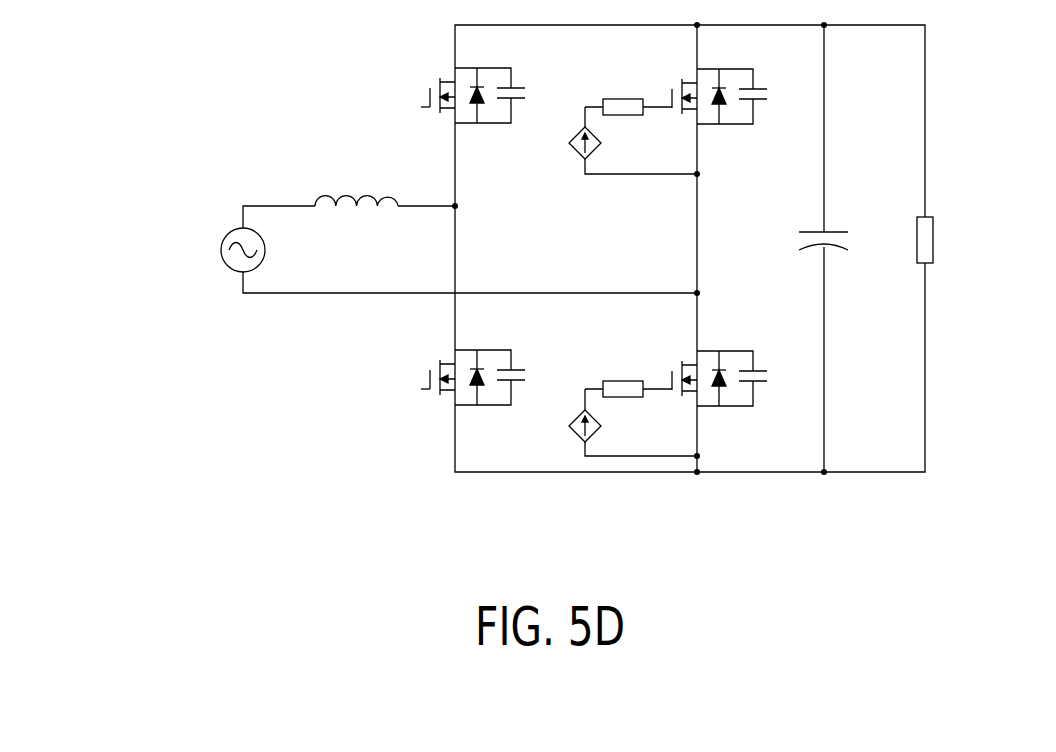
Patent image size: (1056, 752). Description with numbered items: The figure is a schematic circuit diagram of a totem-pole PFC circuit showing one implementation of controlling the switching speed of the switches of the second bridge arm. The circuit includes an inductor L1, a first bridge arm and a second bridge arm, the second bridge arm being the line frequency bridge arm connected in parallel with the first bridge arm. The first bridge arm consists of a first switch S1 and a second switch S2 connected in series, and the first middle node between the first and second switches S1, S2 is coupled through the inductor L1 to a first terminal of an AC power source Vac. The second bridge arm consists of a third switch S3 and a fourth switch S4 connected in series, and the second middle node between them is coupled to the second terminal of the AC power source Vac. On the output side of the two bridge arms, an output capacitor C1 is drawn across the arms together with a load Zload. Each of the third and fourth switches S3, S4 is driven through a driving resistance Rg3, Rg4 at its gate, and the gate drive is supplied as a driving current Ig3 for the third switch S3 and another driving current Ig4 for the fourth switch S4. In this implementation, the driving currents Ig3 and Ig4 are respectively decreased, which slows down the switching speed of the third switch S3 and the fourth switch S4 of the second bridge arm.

The AC power source Vac is at (213, 250).
The inductor L1 is at (356, 179).
The first switch S1 is at (461, 87).
The second switch S2 is at (463, 387).
The third switch S3 is at (719, 116).
The fourth switch S4 is at (719, 399).
The driving resistance Rg3 is at (628, 86).
The driving resistance Rg4 is at (628, 366).
The driving current Ig3 is at (614, 144).
The driving current Ig4 is at (614, 424).
The capacitor C1 is at (805, 244).
The load impedance Zload is at (963, 240).